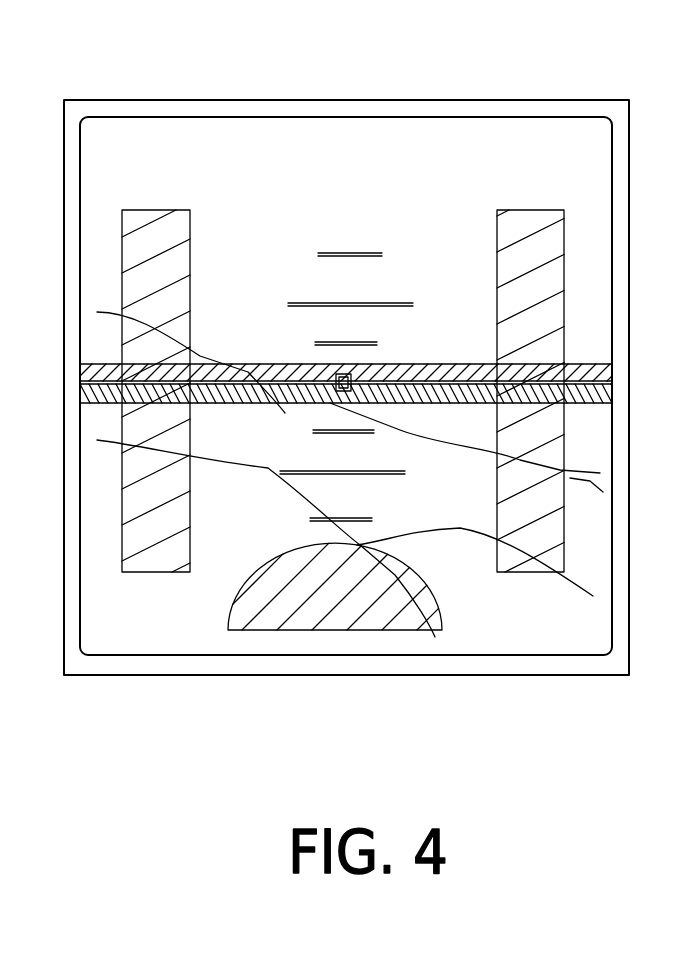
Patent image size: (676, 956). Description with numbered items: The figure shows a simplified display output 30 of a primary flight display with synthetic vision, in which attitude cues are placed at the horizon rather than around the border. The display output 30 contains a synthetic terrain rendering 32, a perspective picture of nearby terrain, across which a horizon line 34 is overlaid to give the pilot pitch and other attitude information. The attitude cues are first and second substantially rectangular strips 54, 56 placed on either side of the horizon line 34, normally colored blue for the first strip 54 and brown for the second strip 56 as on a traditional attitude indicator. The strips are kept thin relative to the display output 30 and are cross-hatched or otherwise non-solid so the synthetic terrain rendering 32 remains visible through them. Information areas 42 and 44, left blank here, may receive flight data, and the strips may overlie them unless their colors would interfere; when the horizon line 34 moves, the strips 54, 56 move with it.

The display output 30 is at (443, 672).
The synthetic terrain rendering 32 is at (487, 615).
The horizon line 34 is at (425, 378).
The information area 42 is at (140, 552).
The information area 44 is at (537, 573).
The first strip 54 is at (258, 374).
The second strip 56 is at (230, 395).